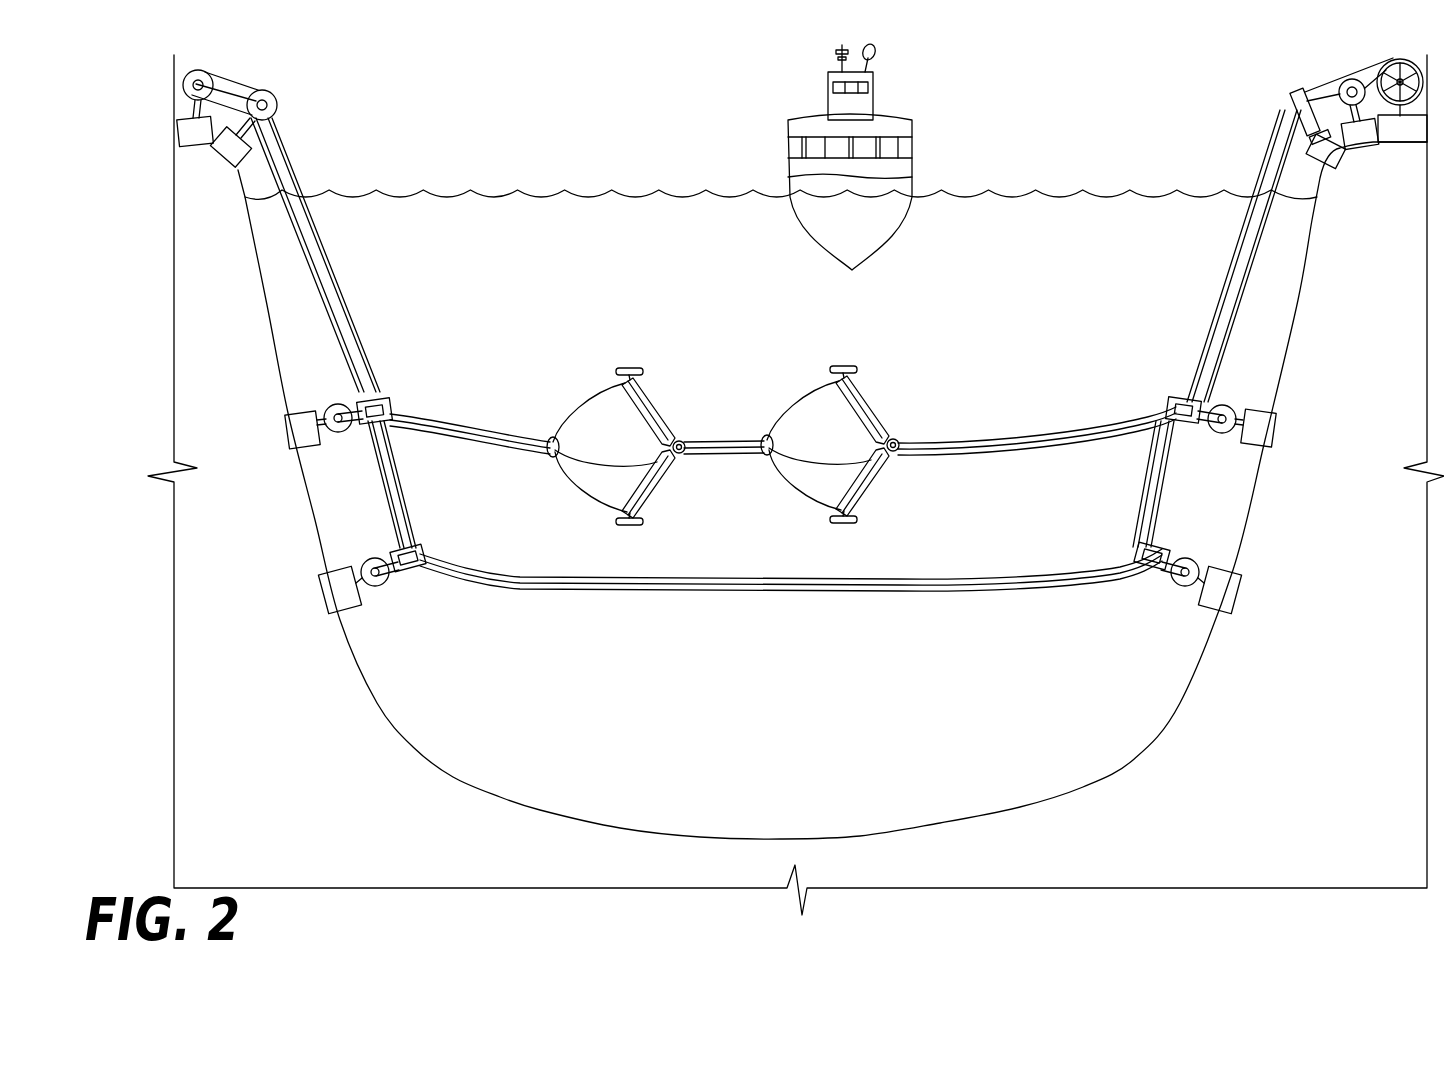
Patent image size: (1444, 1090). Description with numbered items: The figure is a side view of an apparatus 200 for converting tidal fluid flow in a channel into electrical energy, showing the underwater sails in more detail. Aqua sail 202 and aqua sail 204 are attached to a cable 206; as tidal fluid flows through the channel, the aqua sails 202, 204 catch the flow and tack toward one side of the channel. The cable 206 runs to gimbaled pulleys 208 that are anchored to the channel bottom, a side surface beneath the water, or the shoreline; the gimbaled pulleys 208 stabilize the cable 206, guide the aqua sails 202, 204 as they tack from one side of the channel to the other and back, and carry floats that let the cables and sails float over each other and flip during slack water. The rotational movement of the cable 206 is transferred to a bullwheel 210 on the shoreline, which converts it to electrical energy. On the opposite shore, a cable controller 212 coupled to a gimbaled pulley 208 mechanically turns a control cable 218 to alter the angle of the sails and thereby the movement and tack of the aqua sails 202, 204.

The apparatus 200 is at (796, 467).
The aqua sail 202 is at (623, 410).
The aqua sail 204 is at (845, 420).
The cable 206 is at (948, 447).
The gimbaled pulley 208 is at (378, 580).
The bullwheel 210 is at (1377, 70).
The cable controller 212 is at (197, 82).
The control cable 218 is at (987, 455).